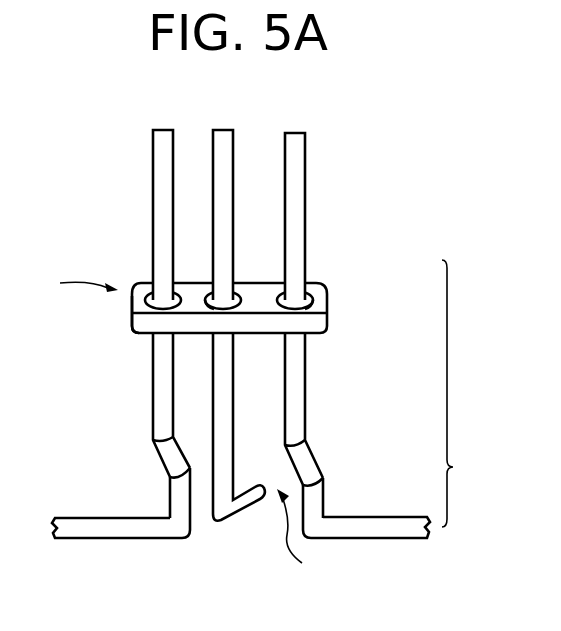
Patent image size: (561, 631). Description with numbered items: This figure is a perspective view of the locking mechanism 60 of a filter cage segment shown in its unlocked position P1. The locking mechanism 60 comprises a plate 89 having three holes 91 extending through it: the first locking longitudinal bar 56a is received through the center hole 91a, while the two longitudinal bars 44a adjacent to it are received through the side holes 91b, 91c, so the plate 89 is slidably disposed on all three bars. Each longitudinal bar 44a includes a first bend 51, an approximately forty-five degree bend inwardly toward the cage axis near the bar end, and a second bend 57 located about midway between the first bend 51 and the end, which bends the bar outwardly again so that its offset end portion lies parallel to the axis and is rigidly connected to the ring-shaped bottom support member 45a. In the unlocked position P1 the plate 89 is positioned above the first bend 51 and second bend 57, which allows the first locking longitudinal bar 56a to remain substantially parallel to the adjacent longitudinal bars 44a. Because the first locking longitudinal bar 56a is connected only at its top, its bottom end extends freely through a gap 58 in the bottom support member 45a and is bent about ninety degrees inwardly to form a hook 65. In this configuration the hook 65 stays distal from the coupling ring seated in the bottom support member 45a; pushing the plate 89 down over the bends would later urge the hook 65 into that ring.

The longitudinal bar 44a is at (153, 148).
The first locking longitudinal bar 56a is at (213, 140).
The holes 91 is at (175, 293).
The plate 89 is at (313, 290).
The center hole 91a is at (208, 299).
The side hole 91b is at (137, 333).
The side hole 91c is at (316, 300).
The unlocked position P1 is at (73, 282).
The first bend 51 is at (157, 443).
The second bend 57 is at (192, 467).
The bottom support member 45a is at (155, 540).
The hook 65 is at (245, 504).
The gap 58 is at (305, 542).
The locking mechanism 60 is at (466, 393).